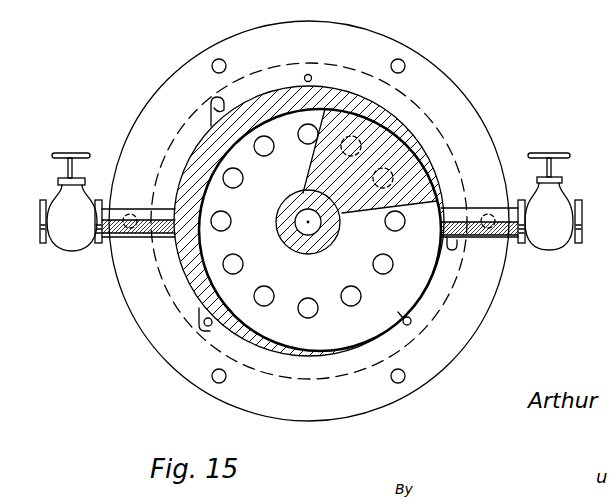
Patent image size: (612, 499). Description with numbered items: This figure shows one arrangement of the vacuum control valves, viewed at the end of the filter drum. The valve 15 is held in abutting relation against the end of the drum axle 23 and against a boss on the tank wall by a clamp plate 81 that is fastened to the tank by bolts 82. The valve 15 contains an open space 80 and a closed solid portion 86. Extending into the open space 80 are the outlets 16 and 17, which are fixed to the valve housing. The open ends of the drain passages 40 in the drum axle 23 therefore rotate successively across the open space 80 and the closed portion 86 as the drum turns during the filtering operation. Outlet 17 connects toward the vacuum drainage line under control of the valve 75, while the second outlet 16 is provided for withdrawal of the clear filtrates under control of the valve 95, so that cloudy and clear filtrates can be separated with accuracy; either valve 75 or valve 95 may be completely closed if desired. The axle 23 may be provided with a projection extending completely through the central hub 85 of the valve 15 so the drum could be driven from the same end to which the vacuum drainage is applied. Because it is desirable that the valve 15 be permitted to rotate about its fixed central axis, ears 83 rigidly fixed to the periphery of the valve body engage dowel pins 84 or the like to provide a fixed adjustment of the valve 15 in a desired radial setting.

The valve 15 is at (418, 293).
The outlet 16 is at (216, 257).
The outlet 17 is at (494, 238).
The drum axle 23 is at (279, 190).
The drain passages 40 is at (390, 230).
The valve 75 is at (557, 200).
The open space 80 is at (195, 330).
The clamp plate 81 is at (167, 97).
The bolts 82 is at (214, 65).
The ears 83 is at (209, 101).
The dowel pins 84 is at (310, 75).
The central hub 85 is at (304, 250).
The closed solid portion 86 is at (417, 143).
The valve 95 is at (78, 250).